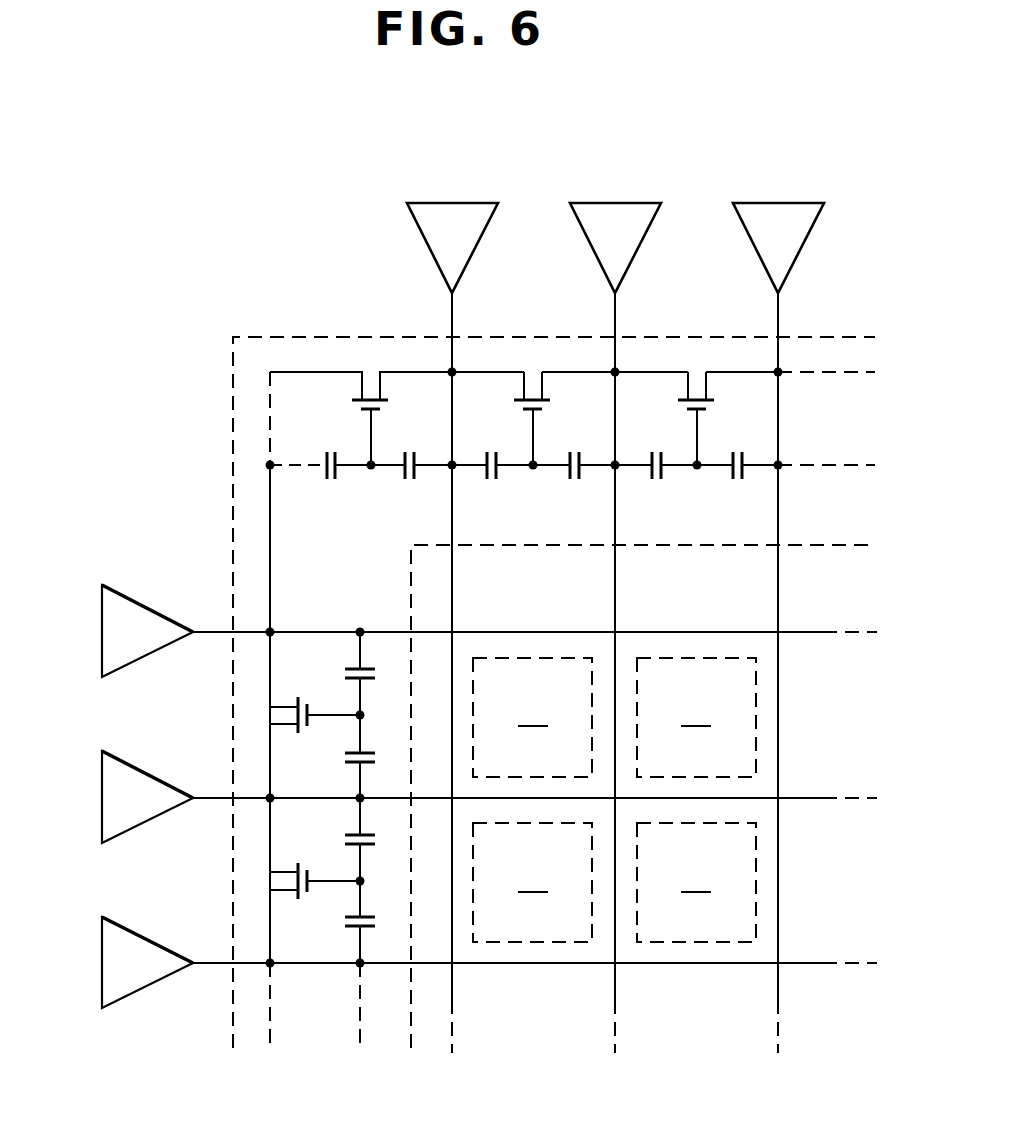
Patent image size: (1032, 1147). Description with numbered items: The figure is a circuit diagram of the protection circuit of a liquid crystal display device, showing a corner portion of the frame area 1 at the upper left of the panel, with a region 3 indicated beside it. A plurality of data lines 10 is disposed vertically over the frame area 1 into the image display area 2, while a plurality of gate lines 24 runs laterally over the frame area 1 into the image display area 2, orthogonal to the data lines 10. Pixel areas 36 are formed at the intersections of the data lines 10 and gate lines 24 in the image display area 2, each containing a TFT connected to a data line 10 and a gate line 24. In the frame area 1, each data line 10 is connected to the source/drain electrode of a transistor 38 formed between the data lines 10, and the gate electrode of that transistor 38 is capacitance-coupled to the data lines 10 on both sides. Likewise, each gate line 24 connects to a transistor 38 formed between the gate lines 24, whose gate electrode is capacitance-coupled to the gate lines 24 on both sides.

The frame area 1 is at (888, 328).
The image display area 2 is at (928, 902).
The peripheral circuit region 3 is at (105, 373).
The data line 10 is at (452, 202).
The gate line 24 is at (102, 630).
The pixel area 36 is at (614, 800).
The transistor 38 is at (352, 409).